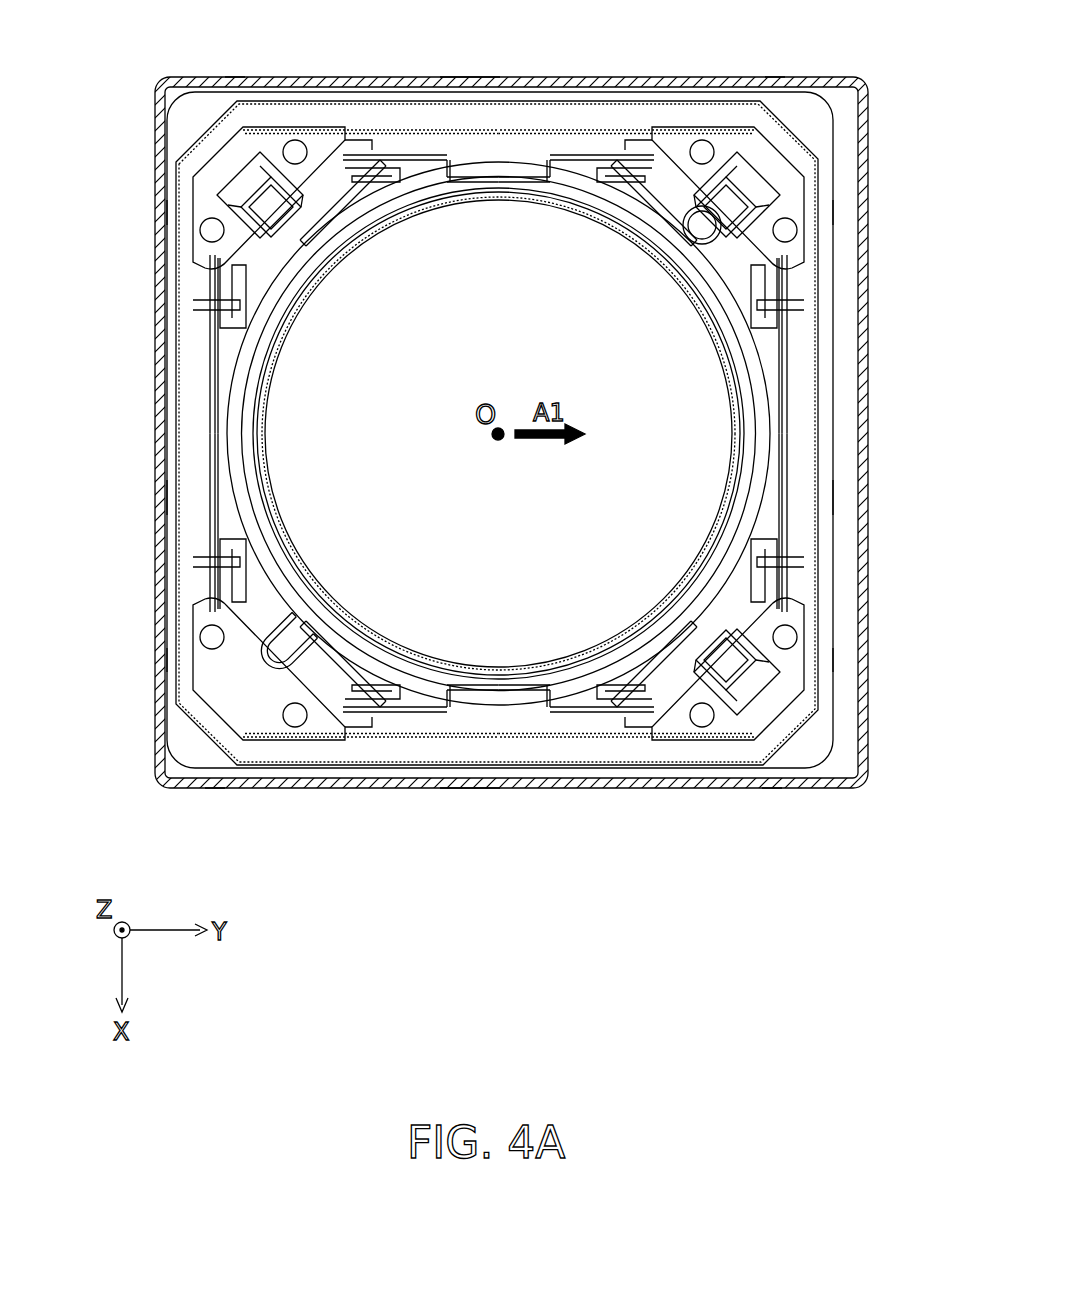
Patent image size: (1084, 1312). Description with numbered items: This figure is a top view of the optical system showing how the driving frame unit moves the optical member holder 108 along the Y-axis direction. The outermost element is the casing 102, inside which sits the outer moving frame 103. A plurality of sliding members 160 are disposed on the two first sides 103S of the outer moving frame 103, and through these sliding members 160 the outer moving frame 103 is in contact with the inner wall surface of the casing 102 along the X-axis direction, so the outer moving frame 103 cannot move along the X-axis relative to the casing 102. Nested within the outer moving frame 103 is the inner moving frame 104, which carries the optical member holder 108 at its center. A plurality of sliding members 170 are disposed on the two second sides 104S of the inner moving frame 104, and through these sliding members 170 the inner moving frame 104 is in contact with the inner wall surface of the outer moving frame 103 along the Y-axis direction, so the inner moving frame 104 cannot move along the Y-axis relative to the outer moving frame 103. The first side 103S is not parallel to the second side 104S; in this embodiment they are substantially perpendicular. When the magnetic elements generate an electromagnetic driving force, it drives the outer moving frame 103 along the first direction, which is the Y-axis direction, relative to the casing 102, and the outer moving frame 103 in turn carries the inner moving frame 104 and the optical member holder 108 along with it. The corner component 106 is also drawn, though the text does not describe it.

The casing 102 is at (330, 77).
The outer moving frame 103 is at (818, 112).
The first side 103S is at (470, 78).
The inner moving frame 104 is at (810, 434).
The second side 104S is at (168, 497).
The holder 106 is at (720, 150).
The optical member holder 108 is at (702, 225).
The sliding member 160 is at (235, 77).
The sliding member 170 is at (170, 210).